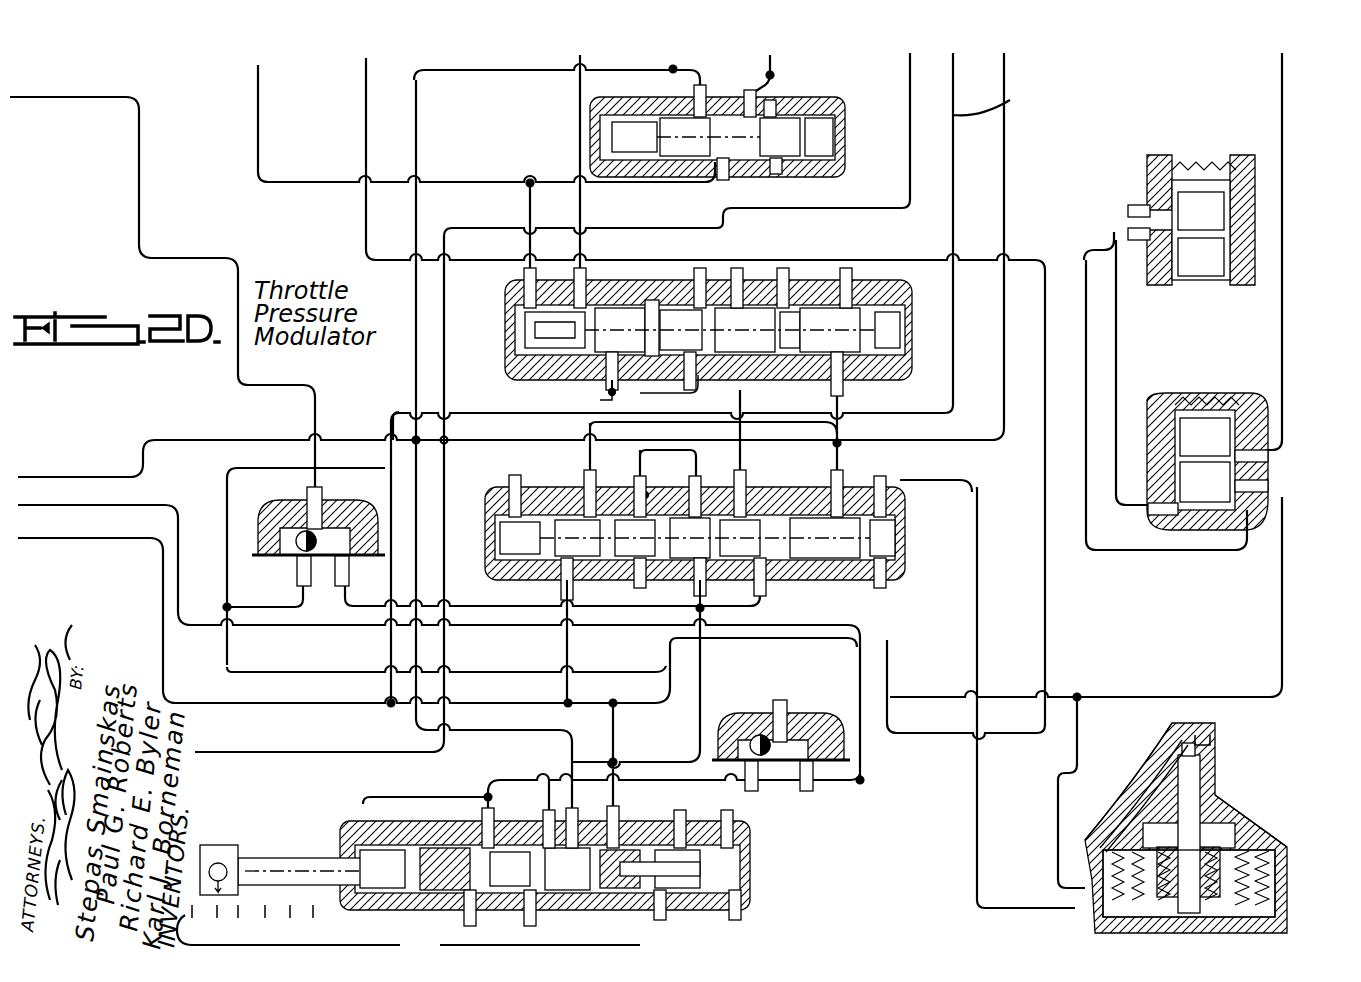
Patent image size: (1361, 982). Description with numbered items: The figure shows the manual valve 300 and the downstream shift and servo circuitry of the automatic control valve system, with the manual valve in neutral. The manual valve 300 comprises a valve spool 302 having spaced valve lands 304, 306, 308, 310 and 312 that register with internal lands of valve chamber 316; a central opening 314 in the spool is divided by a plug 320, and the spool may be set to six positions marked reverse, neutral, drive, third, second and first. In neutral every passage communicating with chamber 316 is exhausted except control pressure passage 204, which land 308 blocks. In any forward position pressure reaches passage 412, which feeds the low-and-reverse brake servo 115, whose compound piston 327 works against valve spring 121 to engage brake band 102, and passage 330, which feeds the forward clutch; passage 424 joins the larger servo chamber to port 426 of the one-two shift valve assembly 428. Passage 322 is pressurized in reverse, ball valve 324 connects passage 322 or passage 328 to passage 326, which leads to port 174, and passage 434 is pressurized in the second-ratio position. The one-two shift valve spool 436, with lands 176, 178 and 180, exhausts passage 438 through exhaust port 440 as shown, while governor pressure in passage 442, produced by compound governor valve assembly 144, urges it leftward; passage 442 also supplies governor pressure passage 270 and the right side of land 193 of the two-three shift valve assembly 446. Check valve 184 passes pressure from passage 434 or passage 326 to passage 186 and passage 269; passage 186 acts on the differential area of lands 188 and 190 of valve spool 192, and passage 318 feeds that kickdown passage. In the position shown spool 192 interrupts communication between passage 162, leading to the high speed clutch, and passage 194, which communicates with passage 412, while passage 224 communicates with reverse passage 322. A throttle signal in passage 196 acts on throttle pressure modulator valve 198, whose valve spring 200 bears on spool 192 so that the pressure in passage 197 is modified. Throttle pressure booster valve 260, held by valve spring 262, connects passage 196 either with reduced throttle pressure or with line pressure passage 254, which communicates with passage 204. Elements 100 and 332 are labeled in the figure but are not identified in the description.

The reverse and low servo 100 is at (1160, 822).
The brake band 102 is at (1160, 770).
The low-and-reverse brake servo 115 is at (1231, 731).
The valve spring 121 is at (1085, 898).
The compound governor valve assembly 144 is at (1152, 298).
The passage 162 is at (880, 208).
The port 174 is at (665, 520).
The valve land 176 is at (700, 580).
The valve land 178 is at (712, 520).
The valve land 180 is at (666, 514).
The check valve 184 is at (300, 540).
The passage 186 is at (510, 258).
The valve land 188 is at (722, 312).
The valve land 190 is at (652, 300).
The valve spool 192 is at (683, 310).
The land 193 is at (701, 319).
The passage 194 is at (498, 400).
The passage 196 is at (543, 184).
The passage 197 is at (612, 392).
The throttle pressure modulator valve 198 is at (528, 330).
The valve spring 200 is at (615, 308).
The passage 204 is at (101, 472).
The passage 224 is at (125, 505).
The passage 254 is at (412, 372).
The throttle pressure booster valve 260 is at (734, 119).
The valve spring 262 is at (625, 122).
The passage 269 is at (187, 262).
The governor pressure passage 270 is at (1280, 85).
The manual valve 300 is at (551, 856).
The valve spool 302 is at (511, 822).
The valve land 304 is at (385, 860).
The valve land 306 is at (485, 797).
The valve land 308 is at (586, 822).
The valve land 310 is at (637, 848).
The valve land 312 is at (700, 855).
The central opening 314 is at (540, 908).
The valve chamber 316 is at (480, 908).
The passage 318 is at (365, 150).
The plug 320 is at (700, 872).
The passage 322 is at (490, 202).
The ball valve 324 is at (790, 719).
The passage 326 is at (330, 480).
The compound piston 327 is at (1105, 913).
The passage 328 is at (812, 776).
The passage 330 is at (617, 723).
The exhaust port 332 is at (370, 945).
The passage 412 is at (85, 542).
The passage 424 is at (975, 898).
The port 426 is at (640, 520).
The 1-2 shift valve assembly 428 is at (742, 520).
The passage 434 is at (700, 740).
The valve spool 436 is at (652, 580).
The passage 438 is at (262, 752).
The exhaust port 440 is at (618, 580).
The passage 442 is at (920, 445).
The 2-3 shift valve assembly 446 is at (743, 312).